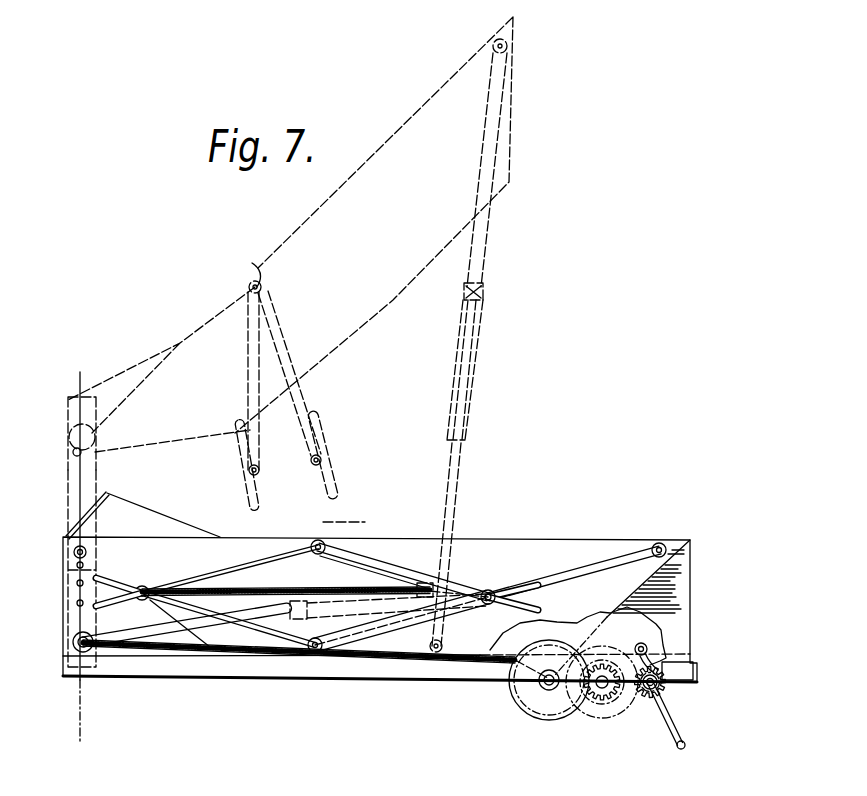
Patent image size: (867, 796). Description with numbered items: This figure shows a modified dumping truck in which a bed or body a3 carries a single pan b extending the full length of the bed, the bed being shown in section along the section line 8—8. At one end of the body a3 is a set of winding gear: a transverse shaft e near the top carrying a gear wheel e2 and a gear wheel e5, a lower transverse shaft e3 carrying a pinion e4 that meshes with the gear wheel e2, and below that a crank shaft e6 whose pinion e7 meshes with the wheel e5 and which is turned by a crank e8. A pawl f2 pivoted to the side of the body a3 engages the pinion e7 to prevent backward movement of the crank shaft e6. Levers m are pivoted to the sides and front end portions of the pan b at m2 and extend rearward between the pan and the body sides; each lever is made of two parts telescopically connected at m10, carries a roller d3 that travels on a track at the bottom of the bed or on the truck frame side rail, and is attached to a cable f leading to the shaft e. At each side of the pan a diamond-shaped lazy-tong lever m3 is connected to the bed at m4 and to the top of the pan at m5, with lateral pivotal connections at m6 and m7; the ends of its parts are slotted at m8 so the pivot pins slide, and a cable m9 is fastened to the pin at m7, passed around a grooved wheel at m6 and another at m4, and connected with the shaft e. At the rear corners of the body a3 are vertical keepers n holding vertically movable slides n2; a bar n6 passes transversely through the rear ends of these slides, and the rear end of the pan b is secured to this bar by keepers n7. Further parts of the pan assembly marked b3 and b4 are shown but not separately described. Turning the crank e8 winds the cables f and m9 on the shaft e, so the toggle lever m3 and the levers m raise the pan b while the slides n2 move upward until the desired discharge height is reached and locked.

The section line 8— 8 is at (79, 556).
The bed or body a3 is at (692, 595).
The pan b is at (511, 549).
The leaf brace b3 is at (125, 508).
The leaf hinge link b4 is at (95, 507).
The vertical keeper n is at (66, 538).
The vertically movable slide n2 is at (77, 442).
The bar n6 is at (86, 553).
The keeper n7 is at (72, 553).
The lever m is at (478, 231).
The pivot of levers m2 is at (661, 545).
The diamond-shaped lazy-tong lever m3 is at (372, 560).
The connection with truck frame or bed m4 is at (316, 652).
The connection with pan m5 is at (212, 240).
The pivotal connection m6 is at (322, 461).
The pivotal connection m7 is at (250, 471).
The slot m8 is at (96, 590).
The cable m9 is at (226, 588).
The telescopic connection m10 is at (465, 399).
The roller d3 is at (73, 643).
The cable f is at (177, 648).
The pawl f2 is at (647, 652).
The transverse shaft e is at (545, 690).
The gear wheel e2 is at (548, 714).
The transverse shaft e3 is at (600, 703).
The pinion e4 is at (616, 706).
The gear wheel e5 is at (590, 707).
The crank shaft e6 is at (666, 688).
The pinion e7 is at (668, 668).
The crank e8 is at (685, 733).